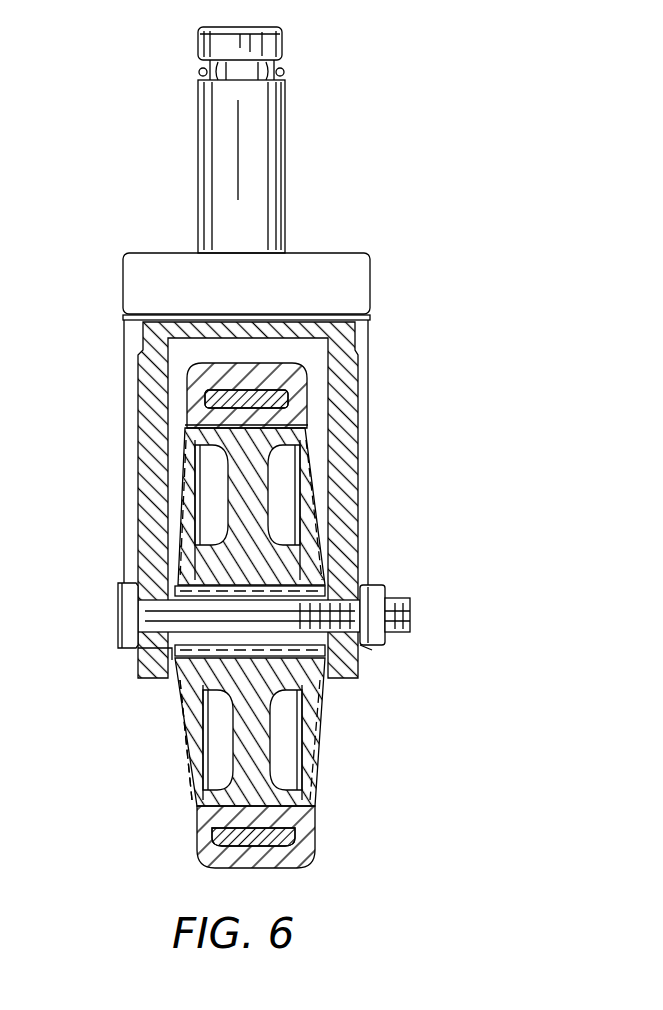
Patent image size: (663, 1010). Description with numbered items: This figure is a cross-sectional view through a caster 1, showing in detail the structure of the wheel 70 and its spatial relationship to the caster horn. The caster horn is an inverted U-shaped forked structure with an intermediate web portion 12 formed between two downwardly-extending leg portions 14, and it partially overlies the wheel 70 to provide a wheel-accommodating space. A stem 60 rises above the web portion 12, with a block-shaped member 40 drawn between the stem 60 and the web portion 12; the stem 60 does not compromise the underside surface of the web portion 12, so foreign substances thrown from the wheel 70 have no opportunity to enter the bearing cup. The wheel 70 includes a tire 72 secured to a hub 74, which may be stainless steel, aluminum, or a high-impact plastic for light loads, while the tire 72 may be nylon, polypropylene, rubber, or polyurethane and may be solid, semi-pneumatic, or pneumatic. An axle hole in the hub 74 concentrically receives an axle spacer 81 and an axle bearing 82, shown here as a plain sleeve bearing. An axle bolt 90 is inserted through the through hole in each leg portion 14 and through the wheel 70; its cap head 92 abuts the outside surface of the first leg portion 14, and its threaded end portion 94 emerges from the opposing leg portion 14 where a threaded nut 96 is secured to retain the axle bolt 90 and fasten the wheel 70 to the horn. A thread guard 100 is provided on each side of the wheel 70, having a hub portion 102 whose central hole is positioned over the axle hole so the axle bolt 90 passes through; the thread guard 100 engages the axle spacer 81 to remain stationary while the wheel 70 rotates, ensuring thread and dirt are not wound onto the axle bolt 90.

The caster 1 is at (372, 146).
The stem 60 is at (207, 160).
The mounting block 40 is at (133, 290).
The web portion 12 is at (330, 322).
The leg portion 14 is at (148, 430).
The wheel 70 is at (321, 423).
The thread guard 100 is at (247, 506).
The hub portion 102 is at (322, 552).
The axle bolt 90 is at (157, 613).
The cap head 92 is at (133, 622).
The threaded end portion 94 is at (410, 612).
The threaded nut 96 is at (372, 650).
The axle spacer 81 is at (138, 660).
The axle bearing 82 is at (185, 688).
The hub 74 is at (285, 732).
The tire 72 is at (300, 862).